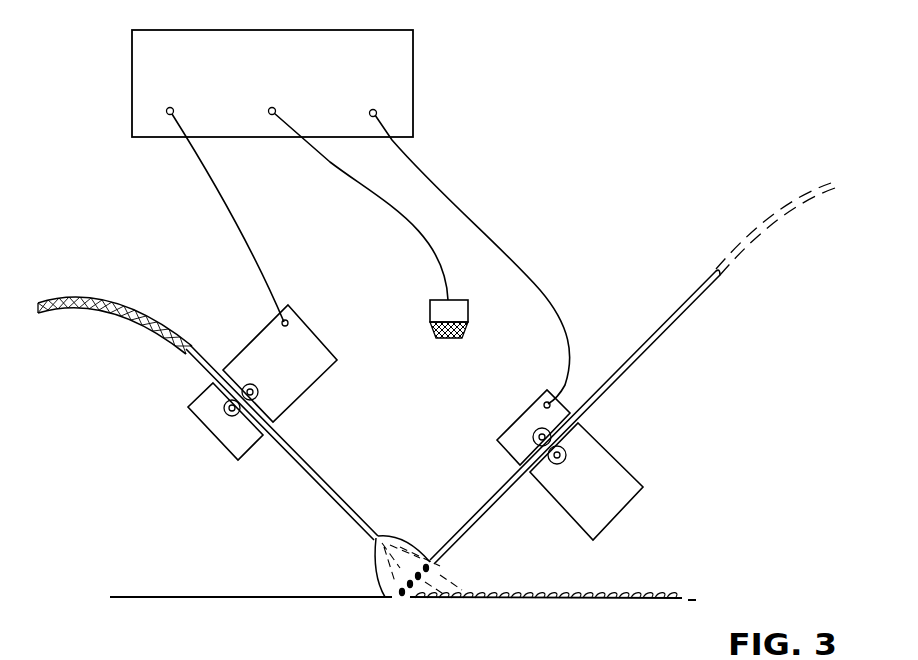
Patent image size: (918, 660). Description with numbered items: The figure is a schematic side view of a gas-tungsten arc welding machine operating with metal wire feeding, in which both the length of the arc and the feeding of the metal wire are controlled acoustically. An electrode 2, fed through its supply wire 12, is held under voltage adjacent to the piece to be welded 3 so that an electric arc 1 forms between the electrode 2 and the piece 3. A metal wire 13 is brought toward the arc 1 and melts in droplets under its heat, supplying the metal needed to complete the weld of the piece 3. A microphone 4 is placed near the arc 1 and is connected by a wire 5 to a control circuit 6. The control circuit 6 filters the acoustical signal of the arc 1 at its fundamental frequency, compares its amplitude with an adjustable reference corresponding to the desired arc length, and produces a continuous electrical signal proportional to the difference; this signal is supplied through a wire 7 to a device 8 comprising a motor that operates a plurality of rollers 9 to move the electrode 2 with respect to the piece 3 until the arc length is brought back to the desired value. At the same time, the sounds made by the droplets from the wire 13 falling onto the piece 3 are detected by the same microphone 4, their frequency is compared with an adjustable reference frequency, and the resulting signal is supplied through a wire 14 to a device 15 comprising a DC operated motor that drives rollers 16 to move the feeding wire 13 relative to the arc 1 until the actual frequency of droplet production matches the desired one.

The electric arc 1 is at (407, 557).
The electrode 2 is at (318, 490).
The piece to be welded 3 is at (206, 597).
The microphone 4 is at (469, 314).
The wire 5 is at (390, 207).
The control circuit 6 is at (413, 88).
The wire 7 is at (240, 228).
The device comprising a motor 8 is at (337, 361).
The rollers 9 is at (242, 408).
The supply wire 12 is at (170, 294).
The wire 13 is at (622, 372).
The wire 14 is at (478, 240).
The device comprising a DC operated motor 15 is at (643, 487).
The rollers 16 is at (566, 455).